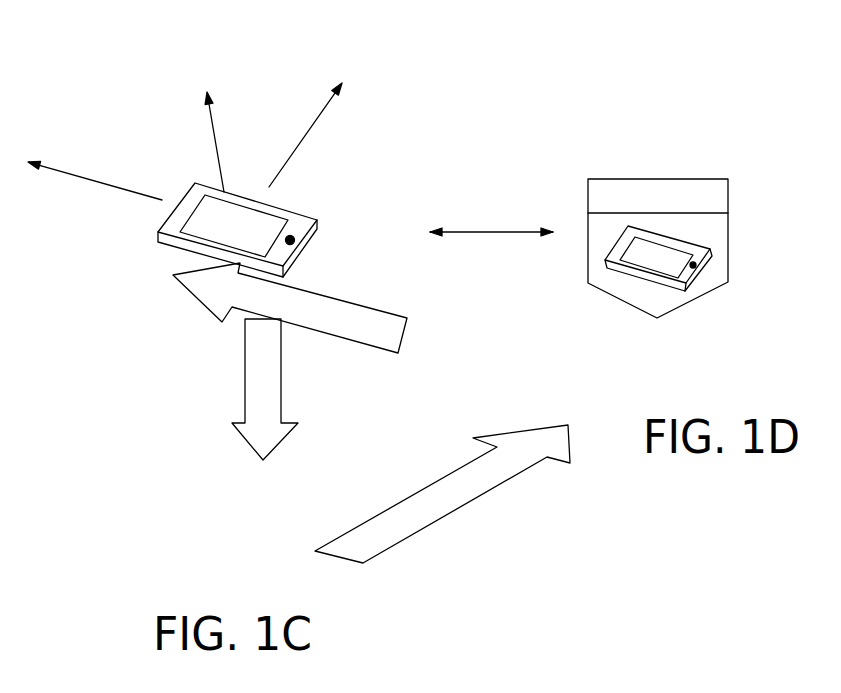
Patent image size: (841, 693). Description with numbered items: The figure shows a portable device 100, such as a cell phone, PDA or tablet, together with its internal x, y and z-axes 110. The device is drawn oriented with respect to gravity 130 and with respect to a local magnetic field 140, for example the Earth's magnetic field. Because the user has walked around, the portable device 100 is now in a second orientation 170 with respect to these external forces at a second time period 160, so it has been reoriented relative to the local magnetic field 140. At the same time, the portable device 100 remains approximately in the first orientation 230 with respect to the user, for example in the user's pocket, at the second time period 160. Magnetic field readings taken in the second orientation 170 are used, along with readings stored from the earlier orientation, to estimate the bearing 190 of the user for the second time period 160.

In FIG. 1C, the portable device 100 is at (377, 79).
In FIG. 1C, the internal x, y and z-axes 110 is at (76, 125).
In FIG. 1C, the gravity 130 is at (243, 423).
In FIG. 1C, the local magnetic field 140 is at (187, 288).
In FIG. 1D, the second time period 160 is at (655, 345).
In FIG. 1C, the second orientation 170 is at (318, 391).
In FIG. 1C, the bearing 190 is at (570, 463).
In FIG. 1D, the first orientation 230 is at (700, 204).